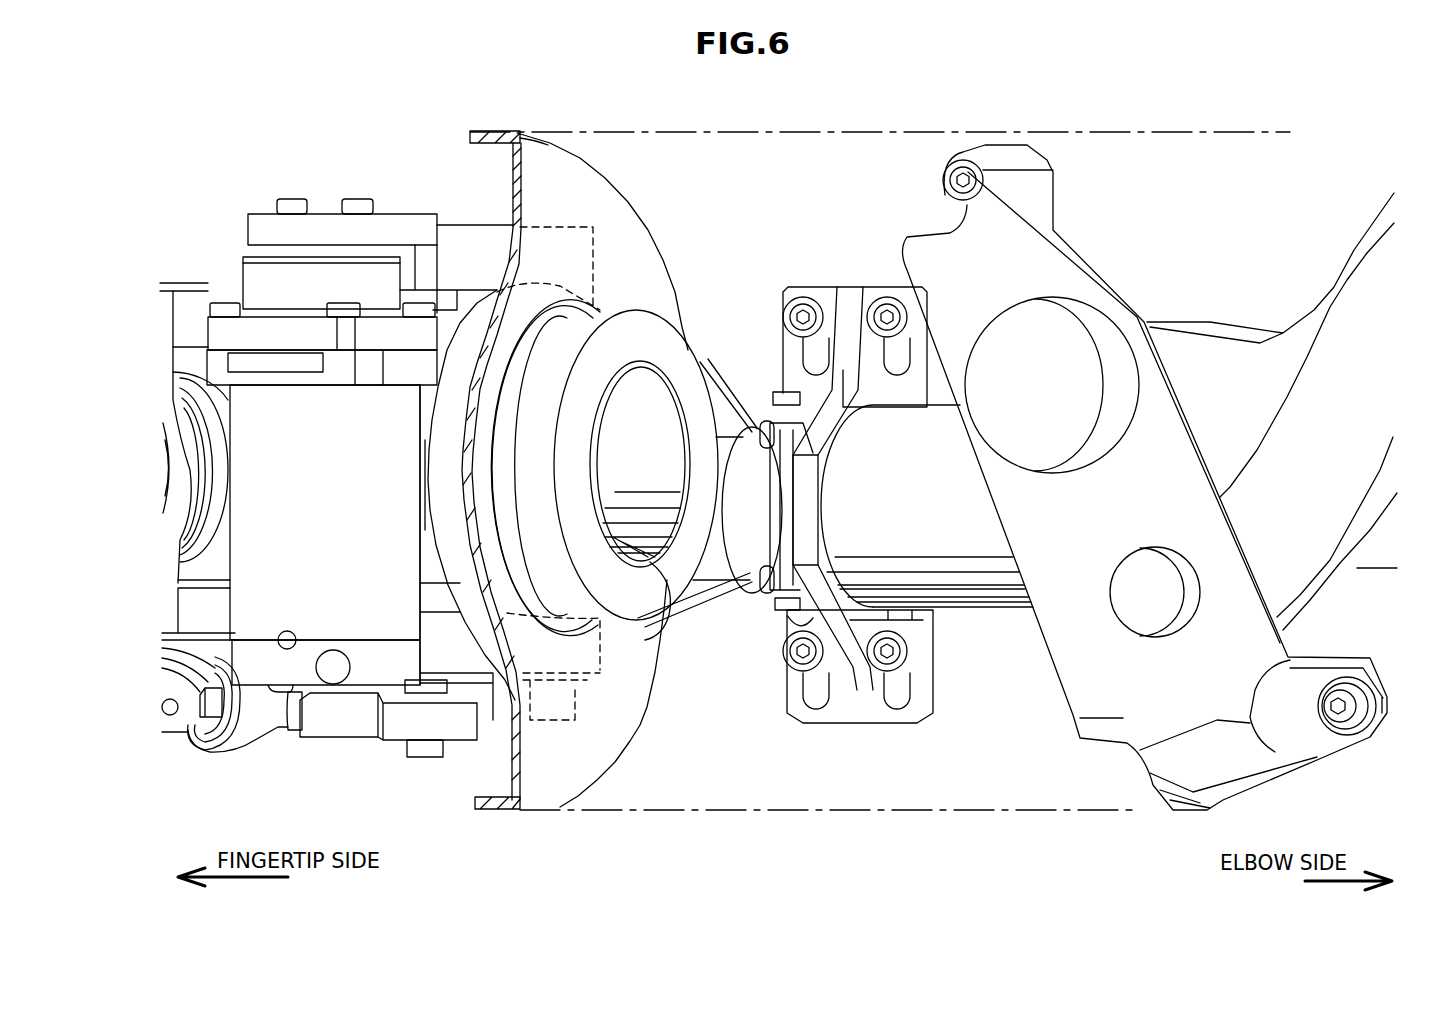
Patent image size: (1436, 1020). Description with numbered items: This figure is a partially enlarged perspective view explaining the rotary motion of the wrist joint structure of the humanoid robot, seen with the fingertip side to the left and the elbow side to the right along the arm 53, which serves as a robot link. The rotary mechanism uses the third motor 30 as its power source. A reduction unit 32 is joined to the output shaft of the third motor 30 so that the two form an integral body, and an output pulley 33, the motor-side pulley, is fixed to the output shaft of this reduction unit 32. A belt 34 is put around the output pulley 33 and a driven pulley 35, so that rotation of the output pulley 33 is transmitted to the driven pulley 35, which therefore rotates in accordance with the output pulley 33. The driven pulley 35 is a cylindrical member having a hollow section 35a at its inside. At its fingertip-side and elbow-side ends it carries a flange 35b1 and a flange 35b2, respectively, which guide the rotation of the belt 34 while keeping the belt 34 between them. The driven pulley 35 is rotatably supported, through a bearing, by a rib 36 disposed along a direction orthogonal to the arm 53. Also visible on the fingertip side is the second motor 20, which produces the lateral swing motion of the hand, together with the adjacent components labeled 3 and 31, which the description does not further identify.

The finger mechanism 3 is at (372, 346).
The second motor 20 is at (367, 657).
The third motor 30 is at (1007, 617).
The clamp block 31 is at (890, 725).
The reduction unit 32 is at (748, 575).
The output pulley 33 is at (710, 573).
The belt 34 is at (733, 403).
The driven pulley 35 is at (618, 461).
The hollow section 35a is at (645, 705).
The flange 35b1 is at (558, 300).
The flange 35b2 is at (657, 320).
The rib 36 is at (586, 182).
The arm 53 is at (857, 824).